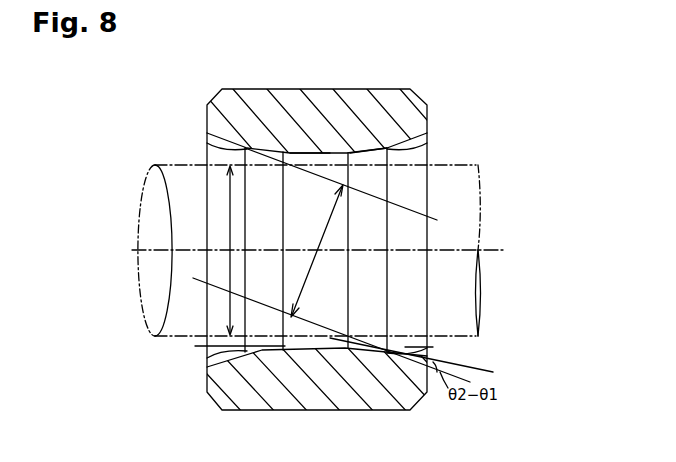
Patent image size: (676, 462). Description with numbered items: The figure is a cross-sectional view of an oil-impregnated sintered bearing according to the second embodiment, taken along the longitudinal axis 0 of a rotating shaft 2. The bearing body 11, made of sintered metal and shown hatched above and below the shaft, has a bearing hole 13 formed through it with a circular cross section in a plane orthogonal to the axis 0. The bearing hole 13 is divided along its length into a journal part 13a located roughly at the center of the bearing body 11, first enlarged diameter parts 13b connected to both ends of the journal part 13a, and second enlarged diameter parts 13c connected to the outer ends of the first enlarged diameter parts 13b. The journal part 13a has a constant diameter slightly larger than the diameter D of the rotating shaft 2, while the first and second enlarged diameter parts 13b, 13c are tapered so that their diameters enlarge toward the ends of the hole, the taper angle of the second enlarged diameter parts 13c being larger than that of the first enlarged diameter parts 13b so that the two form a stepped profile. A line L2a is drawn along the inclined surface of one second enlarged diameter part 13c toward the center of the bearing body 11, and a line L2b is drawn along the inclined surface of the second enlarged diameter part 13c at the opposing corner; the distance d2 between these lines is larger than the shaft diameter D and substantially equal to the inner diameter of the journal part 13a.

The rotating shaft 2 is at (478, 160).
The longitudinal axis 0 is at (325, 251).
The bearing body 11 is at (376, 93).
The bearing hole 13 is at (411, 279).
The journal part 13a is at (312, 155).
The first enlarged diameter parts 13b is at (368, 152).
The second enlarged diameter parts 13c is at (207, 136).
The diameter of the rotating shaft D is at (225, 250).
The distance between line L2a and line L2b d2 is at (317, 251).
The line L2a is at (416, 212).
The line L2b is at (212, 289).